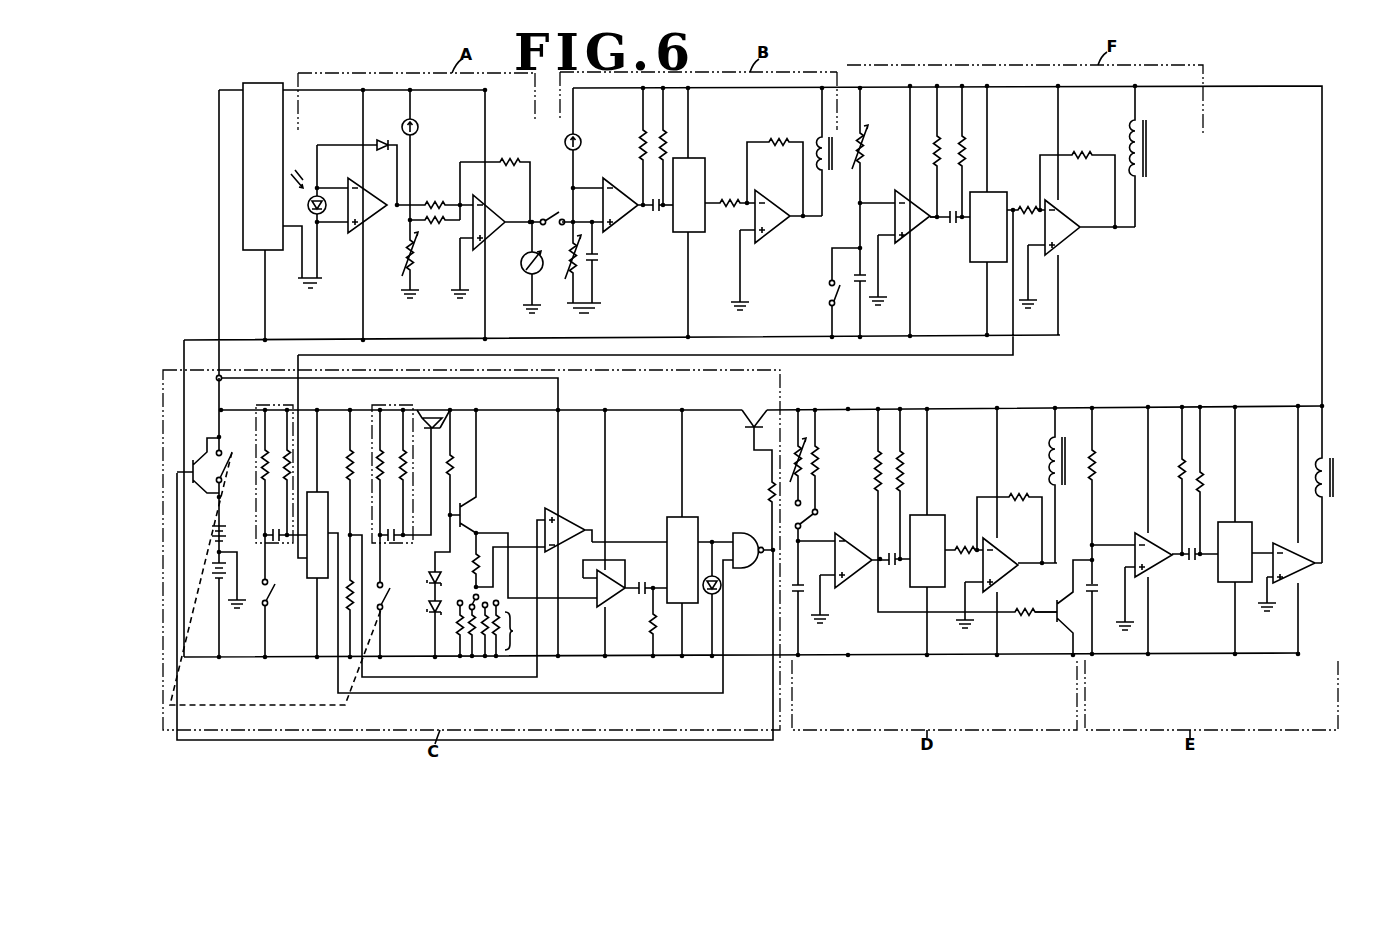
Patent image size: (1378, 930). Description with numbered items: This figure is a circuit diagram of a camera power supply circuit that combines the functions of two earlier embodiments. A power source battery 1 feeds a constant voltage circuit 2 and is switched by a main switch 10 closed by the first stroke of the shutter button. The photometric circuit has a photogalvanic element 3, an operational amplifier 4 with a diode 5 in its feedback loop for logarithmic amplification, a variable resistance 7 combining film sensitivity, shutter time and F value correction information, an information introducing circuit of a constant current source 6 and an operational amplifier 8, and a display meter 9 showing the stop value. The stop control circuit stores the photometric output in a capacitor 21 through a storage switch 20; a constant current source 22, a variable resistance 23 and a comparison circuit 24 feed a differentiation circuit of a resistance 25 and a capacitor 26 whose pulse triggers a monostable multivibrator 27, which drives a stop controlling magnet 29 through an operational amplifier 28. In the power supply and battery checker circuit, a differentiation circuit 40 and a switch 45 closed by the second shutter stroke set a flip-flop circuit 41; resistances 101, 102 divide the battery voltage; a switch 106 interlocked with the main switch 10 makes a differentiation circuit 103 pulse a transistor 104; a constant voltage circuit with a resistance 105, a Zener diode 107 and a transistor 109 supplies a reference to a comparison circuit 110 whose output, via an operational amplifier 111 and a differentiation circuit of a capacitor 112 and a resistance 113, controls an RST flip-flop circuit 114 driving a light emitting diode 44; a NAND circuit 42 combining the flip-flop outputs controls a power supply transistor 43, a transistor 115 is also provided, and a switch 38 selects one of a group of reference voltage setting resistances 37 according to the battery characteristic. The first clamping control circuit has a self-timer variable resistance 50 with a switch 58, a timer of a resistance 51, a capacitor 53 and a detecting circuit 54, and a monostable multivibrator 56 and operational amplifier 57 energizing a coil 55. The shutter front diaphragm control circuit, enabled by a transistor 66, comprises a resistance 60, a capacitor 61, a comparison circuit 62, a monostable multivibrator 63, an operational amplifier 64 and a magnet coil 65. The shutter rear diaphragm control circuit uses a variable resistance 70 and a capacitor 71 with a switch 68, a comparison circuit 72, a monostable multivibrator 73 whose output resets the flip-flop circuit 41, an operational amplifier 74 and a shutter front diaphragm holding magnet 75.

The power source battery 1 is at (230, 544).
The constant voltage circuit 2 is at (263, 211).
The photogalvanic element 3 is at (308, 205).
The operational amplifier 4 is at (367, 205).
The diode 5 is at (378, 139).
The constant current source 6 is at (421, 126).
The variable resistance 7 is at (417, 265).
The operational amplifier 8 is at (470, 229).
The display meter 9 is at (522, 268).
The main switch 10 is at (234, 452).
The storage switch 20 is at (555, 210).
The capacitor 21 is at (603, 262).
The constant current source 22 is at (578, 136).
The variable resistance 23 is at (569, 265).
The comparison circuit 24 is at (607, 205).
The resistance 25 is at (666, 146).
The capacitor 26 is at (660, 218).
The monostable multivibrator 27 is at (689, 212).
The operational amplifier 28 is at (763, 225).
The stop controlling magnet 29 is at (837, 152).
The group of reference voltage setting resistances 37 is at (497, 628).
The switch 38 is at (473, 596).
The differentiation circuit 40 is at (257, 407).
The flip-flop circuit 41 is at (520, 551).
The NAND circuit 42 is at (746, 568).
The power supply controlling transistor 43 is at (748, 425).
The light emitting diode 44 is at (711, 594).
The switch 45 is at (279, 618).
The variable resistance 50 is at (794, 442).
The resistance 51 is at (829, 462).
The capacitor 53 is at (800, 585).
The comparison circuit 54 is at (843, 578).
The coil 55 is at (1070, 485).
The monostable multivibrator 56 is at (927, 531).
The operational amplifier 57 is at (1001, 561).
The switch 58 is at (819, 526).
The resistance 60 is at (1106, 496).
The capacitor 61 is at (1093, 591).
The comparison circuit 62 is at (1152, 581).
The monostable multivibrator 63 is at (1235, 530).
The operational amplifier 64 is at (1287, 577).
The relay coil 65 is at (1337, 484).
The transistor 66 is at (1060, 624).
The switch 68 is at (833, 292).
The variable resistance 70 is at (870, 212).
The capacitor 71 is at (860, 283).
The comparison circuit 72 is at (898, 247).
The monostable multivibrator 73 is at (988, 210).
The operational amplifier 74 is at (1071, 230).
The shutter front diaphragm holding magnet 75 is at (1151, 156).
The resistance 101 is at (431, 543).
The resistance 102 is at (345, 600).
The differentiation circuit 103 is at (374, 406).
The transistor 104 is at (434, 416).
The resistance 105 is at (452, 454).
The switch 106 is at (391, 584).
The Zener diode 107 is at (430, 597).
The transistor 109 is at (471, 518).
The comparison circuit 110 is at (573, 520).
The operational amplifier 111 is at (597, 607).
The capacitor 112 is at (642, 581).
The resistance 113 is at (670, 613).
The RST flip-flop circuit 114 is at (693, 533).
The transistor 115 is at (196, 458).